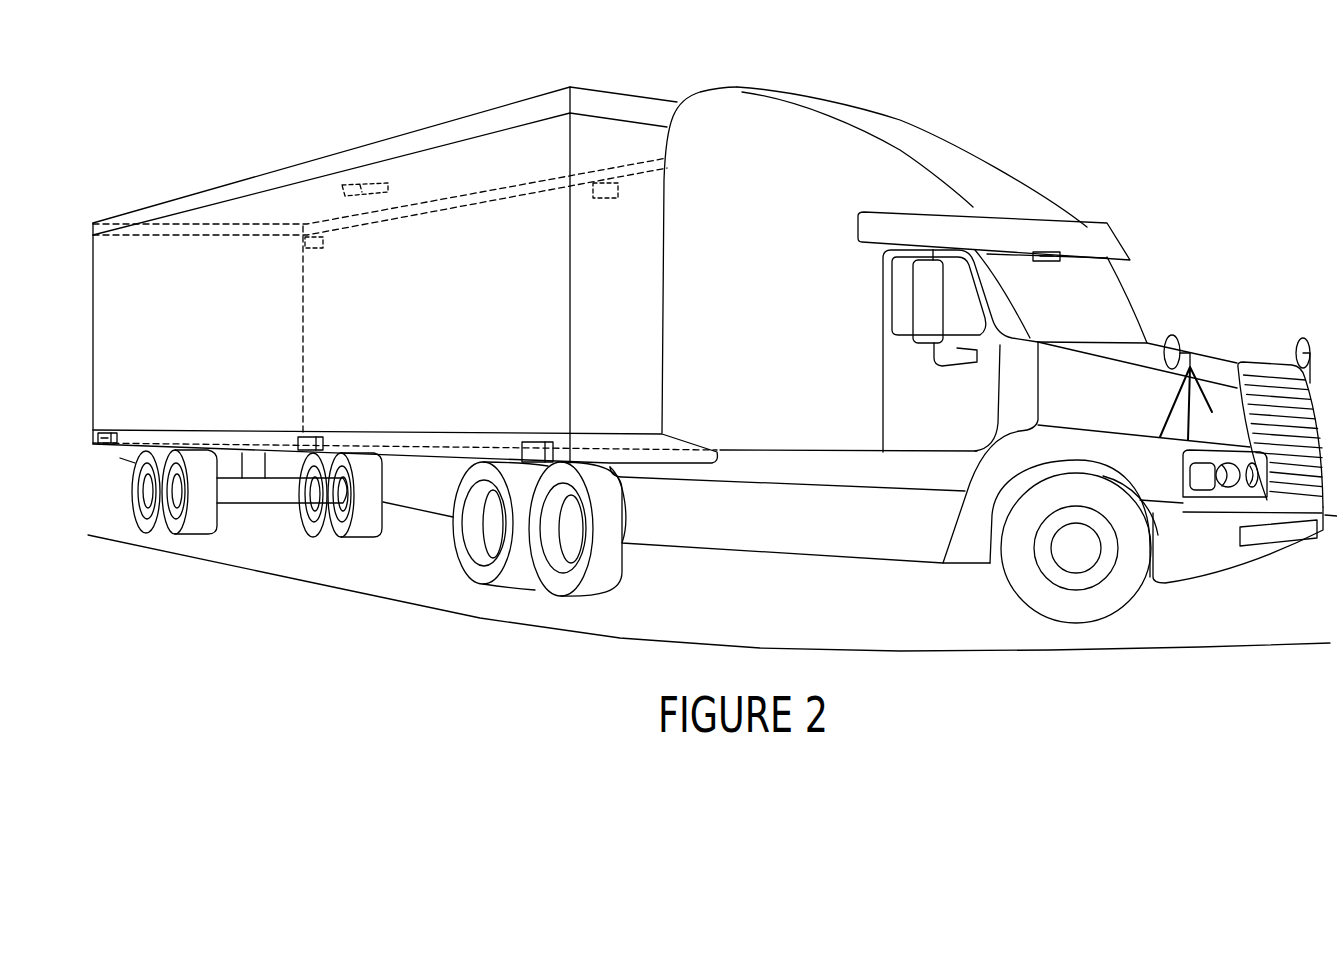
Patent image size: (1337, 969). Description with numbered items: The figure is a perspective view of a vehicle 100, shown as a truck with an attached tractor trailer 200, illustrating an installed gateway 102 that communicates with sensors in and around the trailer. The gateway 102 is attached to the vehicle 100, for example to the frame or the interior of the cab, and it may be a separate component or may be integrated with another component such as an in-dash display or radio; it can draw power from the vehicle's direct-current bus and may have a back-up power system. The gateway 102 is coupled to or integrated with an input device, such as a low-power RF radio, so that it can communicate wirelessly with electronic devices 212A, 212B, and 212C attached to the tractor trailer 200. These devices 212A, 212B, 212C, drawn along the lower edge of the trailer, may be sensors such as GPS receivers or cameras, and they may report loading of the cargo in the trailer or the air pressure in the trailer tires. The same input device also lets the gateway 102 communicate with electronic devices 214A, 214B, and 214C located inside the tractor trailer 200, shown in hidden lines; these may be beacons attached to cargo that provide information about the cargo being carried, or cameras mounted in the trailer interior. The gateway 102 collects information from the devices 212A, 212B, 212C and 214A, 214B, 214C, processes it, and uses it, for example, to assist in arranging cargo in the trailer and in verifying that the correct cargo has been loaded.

The vehicle 100 is at (1113, 227).
The gateway 102 is at (1060, 261).
The tractor trailer 200 is at (437, 127).
The electronic device 212A is at (107, 444).
The electronic device 212B is at (307, 451).
The electronic device 212C is at (533, 462).
The electronic device 214A is at (307, 238).
The electronic device 214B is at (357, 186).
The electronic device 214C is at (607, 183).